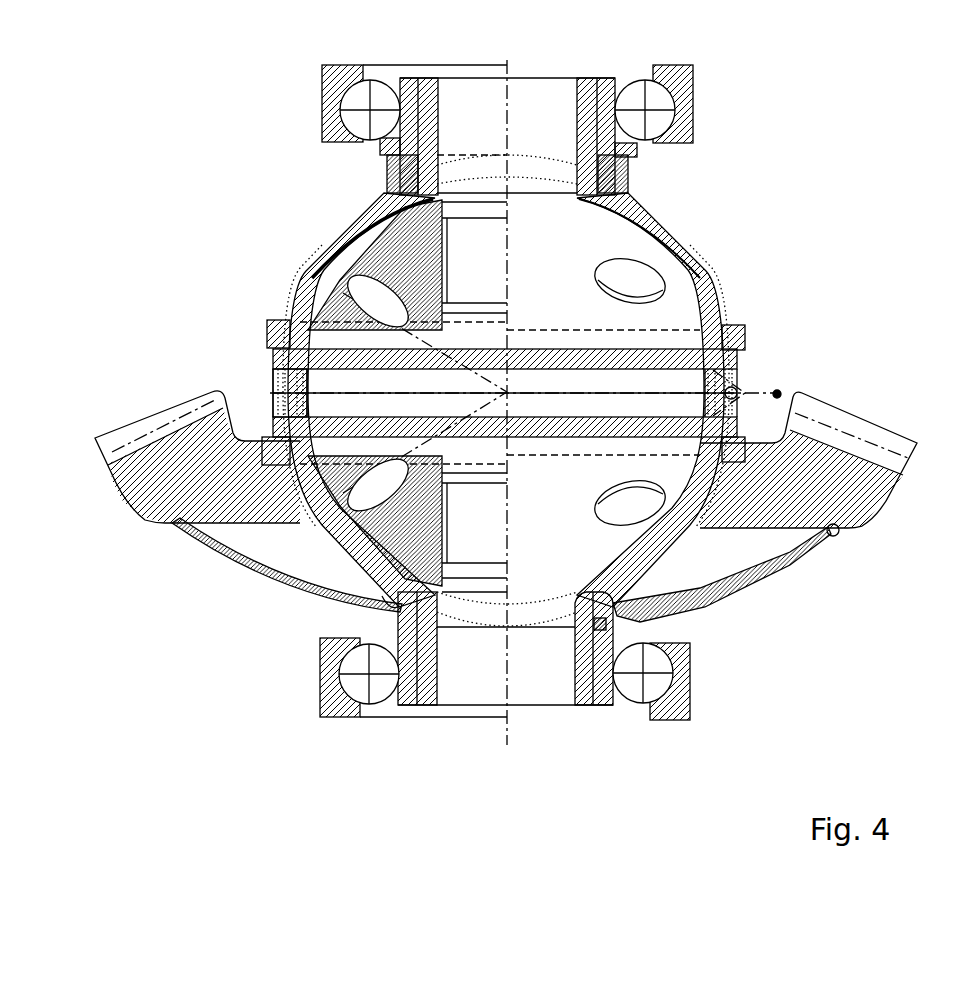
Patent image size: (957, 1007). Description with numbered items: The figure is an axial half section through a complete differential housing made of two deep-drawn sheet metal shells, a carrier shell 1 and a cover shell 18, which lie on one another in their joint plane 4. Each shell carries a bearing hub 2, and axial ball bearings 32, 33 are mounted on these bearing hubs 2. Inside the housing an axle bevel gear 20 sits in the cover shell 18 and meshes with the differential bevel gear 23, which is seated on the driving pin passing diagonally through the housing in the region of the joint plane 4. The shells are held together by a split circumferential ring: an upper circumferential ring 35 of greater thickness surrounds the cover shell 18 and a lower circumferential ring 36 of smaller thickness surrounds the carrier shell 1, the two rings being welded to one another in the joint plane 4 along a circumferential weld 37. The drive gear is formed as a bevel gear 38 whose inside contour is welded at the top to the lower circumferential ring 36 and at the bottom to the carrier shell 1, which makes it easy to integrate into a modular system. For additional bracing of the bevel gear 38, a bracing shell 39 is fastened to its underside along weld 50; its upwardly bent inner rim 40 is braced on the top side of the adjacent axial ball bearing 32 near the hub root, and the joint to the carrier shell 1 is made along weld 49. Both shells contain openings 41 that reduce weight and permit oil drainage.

The carrier shell 1 is at (363, 567).
The bearing hub 2 is at (605, 705).
The joint plane 4 is at (777, 394).
The cover shell 18 is at (372, 218).
The axle bevel gear 20 is at (370, 265).
The differential bevel gear 23 is at (340, 300).
The axial ball bearing 32 is at (677, 697).
The axial ball bearing 33 is at (683, 112).
The upper circumferential ring 35 is at (277, 325).
The lower circumferential ring 36 is at (277, 413).
The circumferential weld 37 is at (743, 380).
The bevel gear 38 is at (857, 503).
The bracing shell 39 is at (230, 560).
The upwardly bent inner rim 40 is at (617, 607).
The openings 41 is at (652, 272).
The weld 49 is at (600, 625).
The weld 50 is at (840, 537).